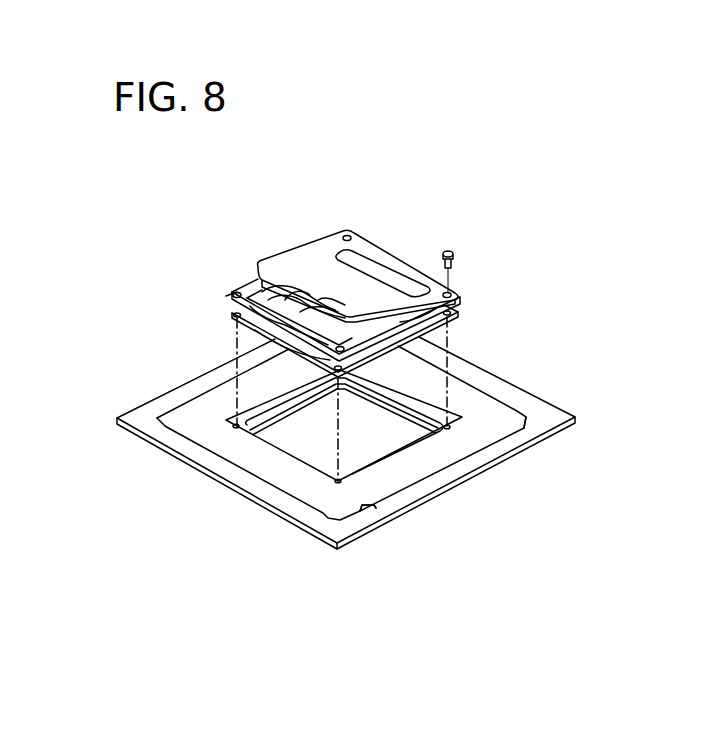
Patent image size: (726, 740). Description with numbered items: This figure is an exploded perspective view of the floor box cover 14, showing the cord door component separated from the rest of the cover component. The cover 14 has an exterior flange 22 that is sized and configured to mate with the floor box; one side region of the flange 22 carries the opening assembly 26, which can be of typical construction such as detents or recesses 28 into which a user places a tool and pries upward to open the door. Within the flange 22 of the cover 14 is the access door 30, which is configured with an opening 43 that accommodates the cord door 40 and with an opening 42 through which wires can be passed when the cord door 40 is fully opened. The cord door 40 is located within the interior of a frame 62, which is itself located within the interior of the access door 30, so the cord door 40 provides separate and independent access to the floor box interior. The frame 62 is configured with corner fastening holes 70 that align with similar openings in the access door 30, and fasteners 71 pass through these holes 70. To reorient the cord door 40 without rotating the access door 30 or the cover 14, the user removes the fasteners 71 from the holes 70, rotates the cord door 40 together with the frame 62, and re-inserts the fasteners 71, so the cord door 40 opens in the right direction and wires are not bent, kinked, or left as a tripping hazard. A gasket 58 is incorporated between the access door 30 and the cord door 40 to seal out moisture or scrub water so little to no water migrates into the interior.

The cover 14 is at (487, 233).
The exterior flange 22 is at (545, 398).
The opening assembly 26 is at (376, 508).
The detents or recesses 28 is at (518, 428).
The access door 30 is at (483, 413).
The cord door 40 is at (314, 268).
The opening 42 is at (408, 408).
The opening 43 is at (297, 294).
The gasket 58 is at (455, 316).
The frame 62 is at (380, 250).
The corner fastening holes 70 is at (237, 293).
The fasteners 71 is at (448, 251).